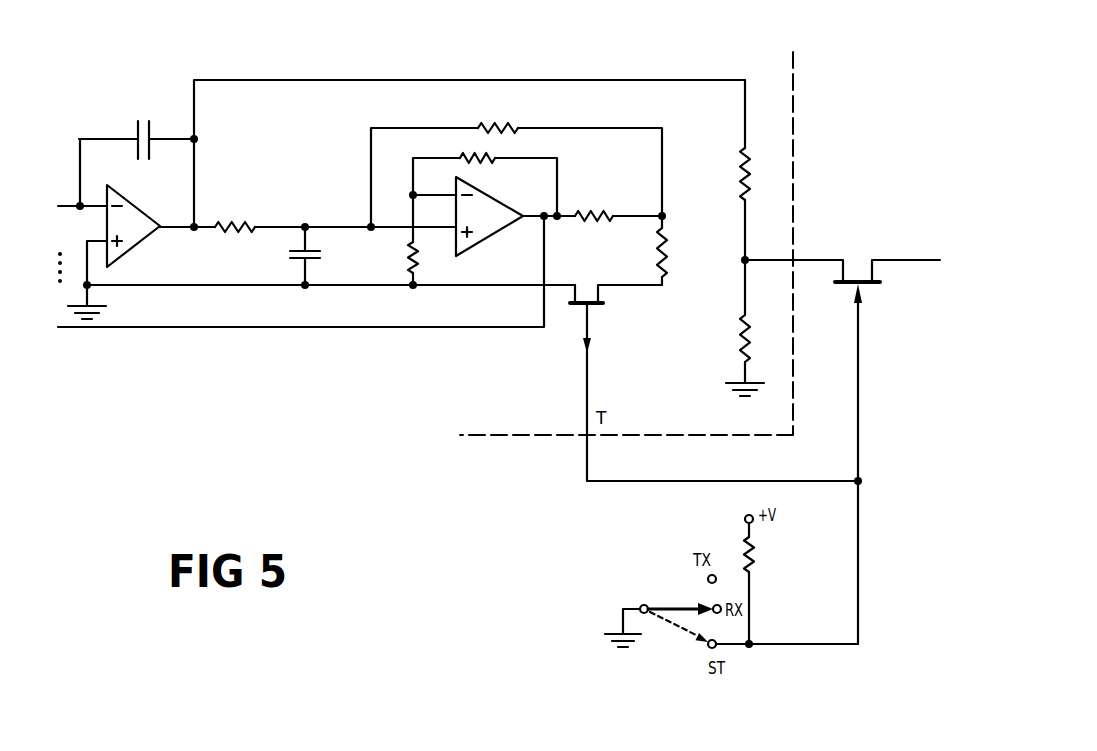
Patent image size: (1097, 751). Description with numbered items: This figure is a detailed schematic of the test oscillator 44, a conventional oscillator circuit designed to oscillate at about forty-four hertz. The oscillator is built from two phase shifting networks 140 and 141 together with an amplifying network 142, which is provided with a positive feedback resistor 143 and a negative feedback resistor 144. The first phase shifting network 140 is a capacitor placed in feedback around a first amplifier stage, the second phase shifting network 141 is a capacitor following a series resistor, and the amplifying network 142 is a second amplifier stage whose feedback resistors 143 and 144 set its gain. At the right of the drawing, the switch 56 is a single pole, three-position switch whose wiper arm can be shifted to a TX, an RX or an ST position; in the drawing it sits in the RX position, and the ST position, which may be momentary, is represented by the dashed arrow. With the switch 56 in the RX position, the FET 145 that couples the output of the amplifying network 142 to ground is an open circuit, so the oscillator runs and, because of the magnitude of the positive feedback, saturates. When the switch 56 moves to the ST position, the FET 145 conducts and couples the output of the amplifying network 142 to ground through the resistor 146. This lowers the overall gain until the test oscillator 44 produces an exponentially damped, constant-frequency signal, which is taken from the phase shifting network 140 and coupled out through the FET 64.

The test oscillator 44 is at (401, 263).
The phase shifting network 140 is at (130, 127).
The phase shifting network 141 is at (297, 210).
The amplifying network 142 is at (502, 197).
The positive feedback resistor 143 is at (521, 122).
The negative feedback resistor 144 is at (492, 157).
The FET 145 is at (584, 300).
The resistor 146 is at (665, 250).
The FET 64 is at (850, 277).
The switch 56 is at (623, 607).